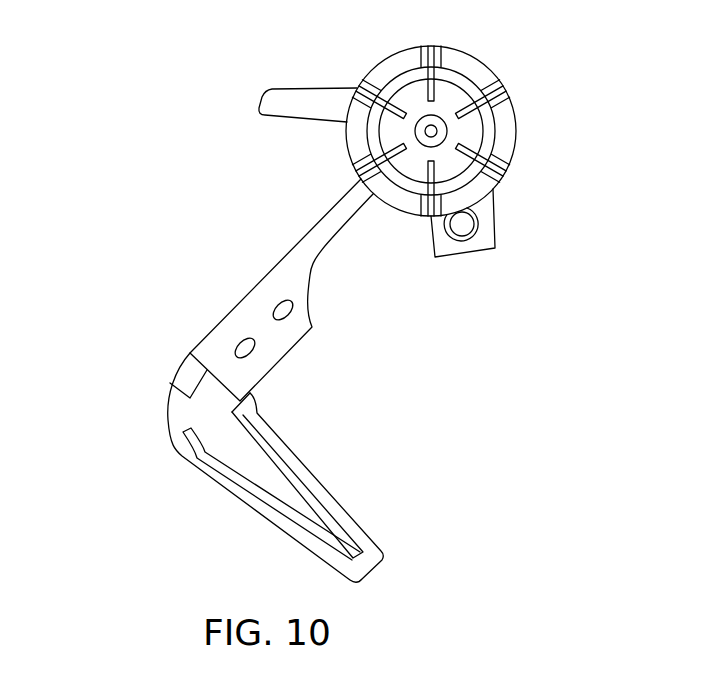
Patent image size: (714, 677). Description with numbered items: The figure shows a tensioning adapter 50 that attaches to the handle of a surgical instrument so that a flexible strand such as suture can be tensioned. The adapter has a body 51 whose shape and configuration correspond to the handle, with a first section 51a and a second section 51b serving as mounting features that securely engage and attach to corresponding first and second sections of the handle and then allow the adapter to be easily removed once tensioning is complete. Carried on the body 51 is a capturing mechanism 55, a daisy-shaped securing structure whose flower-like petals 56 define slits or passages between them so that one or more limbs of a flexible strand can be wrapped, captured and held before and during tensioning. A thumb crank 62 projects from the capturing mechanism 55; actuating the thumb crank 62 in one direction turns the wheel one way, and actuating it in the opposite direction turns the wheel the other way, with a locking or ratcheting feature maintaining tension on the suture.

The tensioning adapter 50 is at (118, 349).
The body 51 is at (241, 304).
The first section 51a is at (233, 455).
The second section 51b is at (493, 220).
The capturing mechanism 55 is at (493, 133).
The petals 56 is at (465, 80).
The thumb crank 62 is at (302, 104).